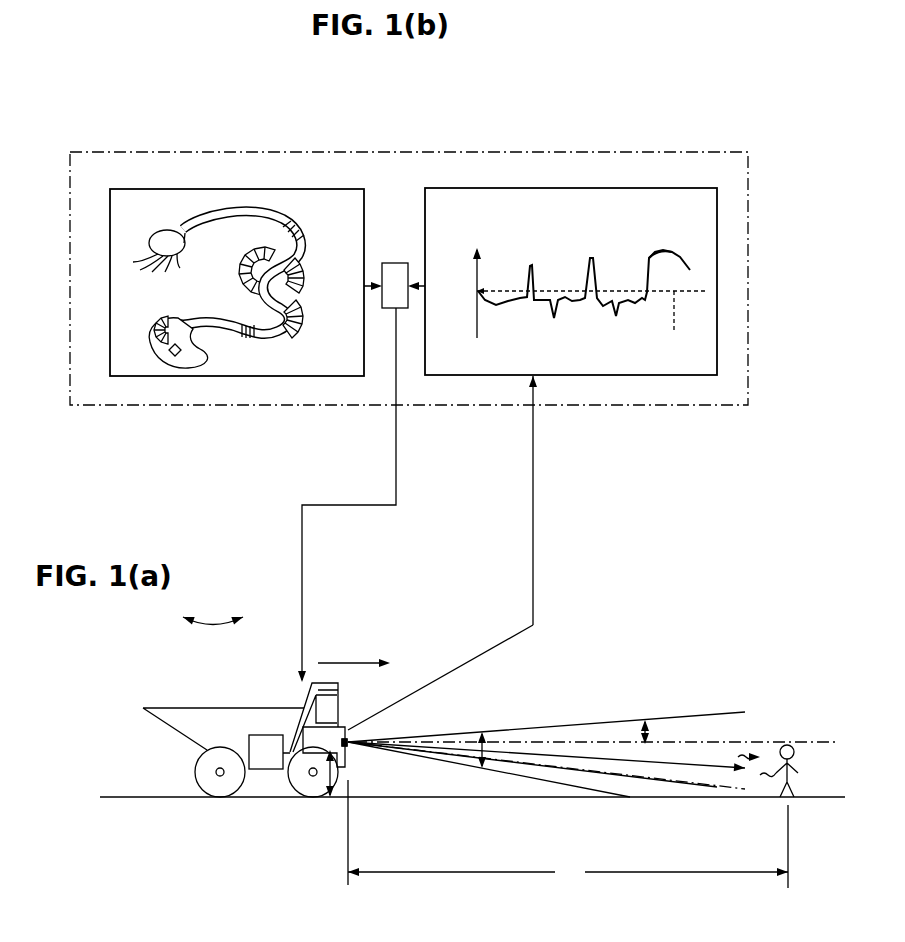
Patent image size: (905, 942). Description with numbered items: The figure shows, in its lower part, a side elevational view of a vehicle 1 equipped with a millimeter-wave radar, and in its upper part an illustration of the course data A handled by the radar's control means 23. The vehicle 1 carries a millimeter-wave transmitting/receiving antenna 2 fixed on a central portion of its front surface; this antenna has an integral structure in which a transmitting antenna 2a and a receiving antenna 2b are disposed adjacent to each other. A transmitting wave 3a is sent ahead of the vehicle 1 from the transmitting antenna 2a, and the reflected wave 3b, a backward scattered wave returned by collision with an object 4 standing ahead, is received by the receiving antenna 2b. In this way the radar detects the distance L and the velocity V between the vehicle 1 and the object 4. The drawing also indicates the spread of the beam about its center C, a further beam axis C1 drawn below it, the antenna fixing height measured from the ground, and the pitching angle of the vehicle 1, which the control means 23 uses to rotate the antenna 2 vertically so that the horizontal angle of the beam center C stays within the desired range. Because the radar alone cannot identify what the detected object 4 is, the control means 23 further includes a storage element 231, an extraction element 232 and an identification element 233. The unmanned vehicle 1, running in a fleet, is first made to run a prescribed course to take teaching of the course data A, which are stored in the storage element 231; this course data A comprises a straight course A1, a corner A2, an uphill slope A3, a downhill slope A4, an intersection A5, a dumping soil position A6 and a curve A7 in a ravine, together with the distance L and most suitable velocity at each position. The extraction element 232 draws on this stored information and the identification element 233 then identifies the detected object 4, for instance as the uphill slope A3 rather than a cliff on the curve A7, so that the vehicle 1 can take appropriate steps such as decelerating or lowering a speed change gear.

The control means 23 is at (699, 150).
The storage element 231 is at (184, 189).
The extraction element 232 is at (516, 188).
The identification element 233 is at (396, 263).
The course data A is at (253, 211).
The straight course A1 is at (193, 229).
The corner A2 is at (298, 250).
The uphill slope A3 is at (297, 233).
The downhill slope A4 is at (250, 337).
The intersection A5 is at (220, 320).
The dumping soil position A6 is at (157, 240).
The curve A7 is at (257, 278).
The vehicle 1 is at (208, 708).
The millimeter-wave transmitting/receiving antenna 2 is at (350, 746).
The transmitting antenna 2a is at (344, 740).
The receiving antenna 2b is at (344, 744).
The transmitting wave 3a is at (748, 745).
The reflected wave 3b is at (752, 773).
The object 4 is at (797, 766).
The center of the antenna beam C is at (548, 740).
The lower beam axis C1 is at (618, 800).
The antenna fixing height h is at (327, 780).
The distance L is at (568, 834).
The velocity V is at (345, 660).